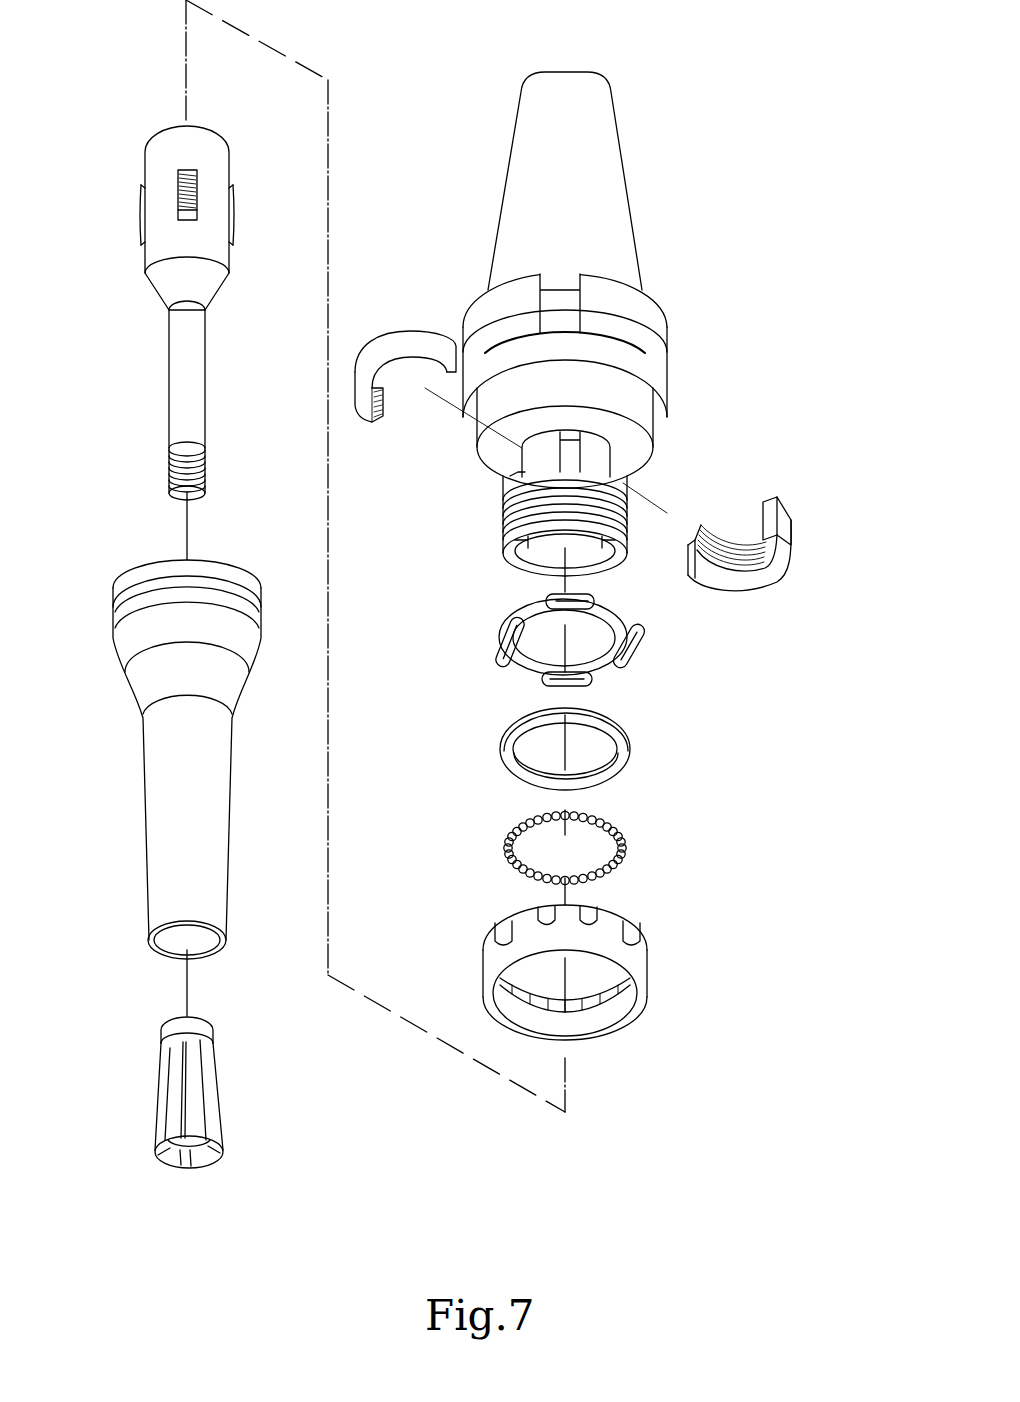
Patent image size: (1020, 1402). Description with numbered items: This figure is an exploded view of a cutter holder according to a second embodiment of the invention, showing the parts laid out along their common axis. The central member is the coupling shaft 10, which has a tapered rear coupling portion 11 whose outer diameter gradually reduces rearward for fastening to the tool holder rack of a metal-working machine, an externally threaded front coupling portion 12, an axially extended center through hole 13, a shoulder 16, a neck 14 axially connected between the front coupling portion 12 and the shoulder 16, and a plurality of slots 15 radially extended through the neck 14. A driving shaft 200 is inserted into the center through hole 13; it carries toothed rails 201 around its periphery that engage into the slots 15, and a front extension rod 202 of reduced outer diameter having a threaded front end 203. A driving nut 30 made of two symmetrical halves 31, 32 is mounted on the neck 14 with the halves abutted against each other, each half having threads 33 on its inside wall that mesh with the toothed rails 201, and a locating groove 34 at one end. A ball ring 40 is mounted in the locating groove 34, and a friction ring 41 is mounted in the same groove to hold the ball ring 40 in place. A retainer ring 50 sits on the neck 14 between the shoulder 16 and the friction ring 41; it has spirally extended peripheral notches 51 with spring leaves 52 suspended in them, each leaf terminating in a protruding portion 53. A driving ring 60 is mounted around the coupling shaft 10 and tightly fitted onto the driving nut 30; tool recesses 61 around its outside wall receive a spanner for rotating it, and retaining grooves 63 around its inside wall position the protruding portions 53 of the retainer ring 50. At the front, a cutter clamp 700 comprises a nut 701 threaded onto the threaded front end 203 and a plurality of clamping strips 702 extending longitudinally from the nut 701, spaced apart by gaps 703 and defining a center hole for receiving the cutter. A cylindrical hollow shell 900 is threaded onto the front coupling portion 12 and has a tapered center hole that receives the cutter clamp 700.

The coupling shaft 10 is at (588, 333).
The tapered rear coupling portion 11 is at (610, 178).
The externally threaded front coupling portion 12 is at (622, 533).
The axially extended center through hole 13 is at (532, 560).
The neck 14 is at (515, 478).
The slots 15 is at (560, 456).
The shoulder 16 is at (545, 428).
The driving nut 30 is at (780, 548).
The symmetrical half 31 is at (773, 578).
The symmetrical half 32 is at (358, 389).
The threads 33 is at (722, 580).
The locating groove 34 is at (766, 506).
The ball ring 40 is at (626, 850).
The friction ring 41 is at (624, 758).
The retainer ring 50 is at (587, 659).
The spirally extended peripheral notches 51 is at (640, 676).
The spring leaves 52 is at (546, 686).
The protruding portion 53 is at (502, 662).
The driving ring 60 is at (602, 979).
The tool recesses 61 is at (630, 930).
The retaining grooves 63 is at (615, 1005).
The driving shaft 200 is at (196, 316).
The toothed rails 201 is at (192, 172).
The front extension rod 202 is at (175, 389).
The threaded front end 203 is at (168, 474).
The cutter clamp 700 is at (215, 1092).
The nut 701 is at (214, 1036).
The clamping strips 702 is at (204, 1124).
The gaps 703 is at (190, 1086).
The shell 900 is at (156, 810).